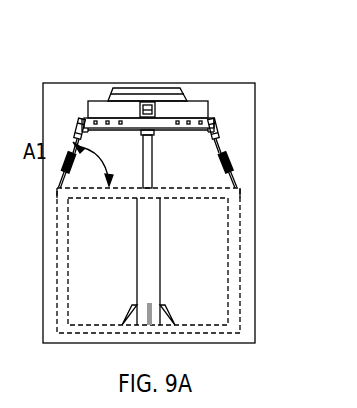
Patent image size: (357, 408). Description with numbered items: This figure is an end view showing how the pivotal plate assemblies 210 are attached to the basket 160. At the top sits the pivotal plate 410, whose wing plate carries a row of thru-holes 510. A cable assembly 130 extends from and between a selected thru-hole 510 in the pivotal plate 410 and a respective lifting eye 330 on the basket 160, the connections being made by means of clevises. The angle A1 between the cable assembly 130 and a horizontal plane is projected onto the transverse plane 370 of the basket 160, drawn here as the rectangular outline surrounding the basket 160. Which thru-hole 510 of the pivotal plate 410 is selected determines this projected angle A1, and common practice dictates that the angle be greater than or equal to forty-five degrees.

The transverse plane 370 is at (74, 83).
The pivotal plate 410 is at (125, 88).
The pivotal plate assembly 210 is at (165, 90).
The thru-hole 510 is at (212, 118).
The cable assembly 130 is at (221, 140).
The lifting eye 330 is at (233, 173).
The basket 160 is at (240, 228).